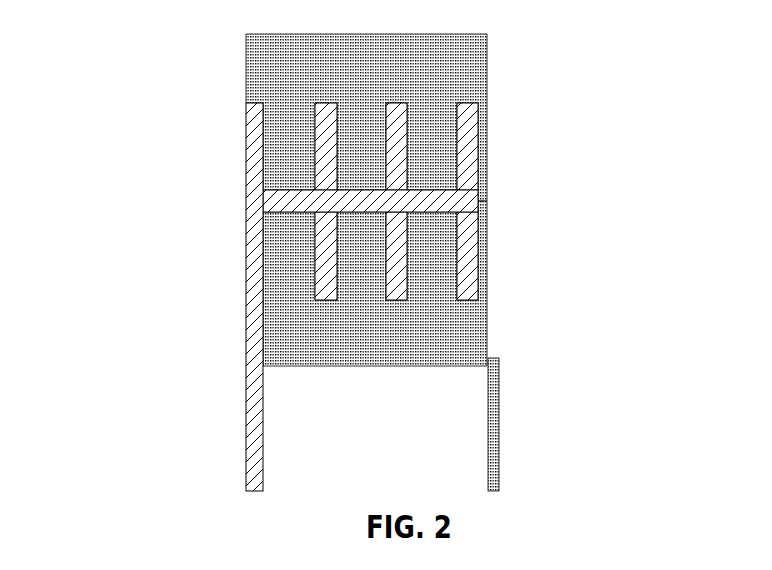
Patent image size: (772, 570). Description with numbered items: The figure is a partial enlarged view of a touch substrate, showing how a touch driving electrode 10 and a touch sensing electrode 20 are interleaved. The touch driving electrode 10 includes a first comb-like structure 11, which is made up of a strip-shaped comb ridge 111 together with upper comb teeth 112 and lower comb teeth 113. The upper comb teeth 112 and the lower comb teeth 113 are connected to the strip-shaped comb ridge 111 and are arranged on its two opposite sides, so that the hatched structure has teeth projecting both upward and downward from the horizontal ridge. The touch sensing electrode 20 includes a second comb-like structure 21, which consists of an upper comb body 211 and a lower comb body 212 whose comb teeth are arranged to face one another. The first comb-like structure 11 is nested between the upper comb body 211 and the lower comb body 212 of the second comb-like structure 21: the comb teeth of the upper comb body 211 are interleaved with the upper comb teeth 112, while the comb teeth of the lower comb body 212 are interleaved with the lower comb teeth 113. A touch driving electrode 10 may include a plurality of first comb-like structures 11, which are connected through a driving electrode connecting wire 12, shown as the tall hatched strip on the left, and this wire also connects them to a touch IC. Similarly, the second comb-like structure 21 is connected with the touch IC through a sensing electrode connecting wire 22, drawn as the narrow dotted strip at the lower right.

The touch driving electrode 10 is at (256, 297).
The first comb-like structure 11 is at (282, 201).
The driving electrode connecting wire 12 is at (196, 297).
The strip-shaped comb ridge 111 is at (283, 203).
The upper comb teeth 112 is at (320, 143).
The lower comb teeth 113 is at (330, 257).
The touch sensing electrode 20 is at (498, 262).
The second comb-like structure 21 is at (466, 200).
The upper comb body 211 is at (460, 73).
The lower comb body 212 is at (434, 283).
The sensing electrode connecting wire 22 is at (566, 424).